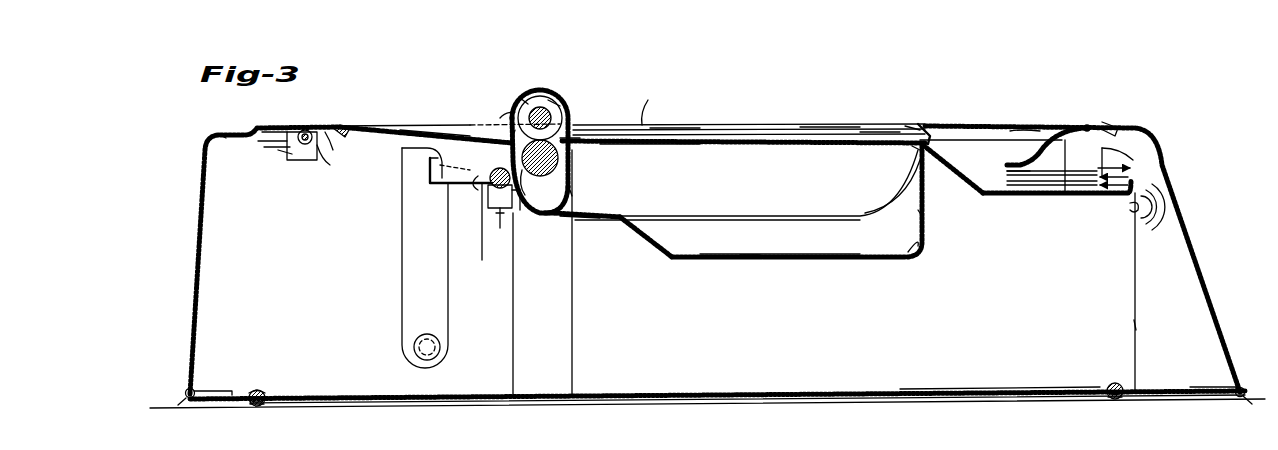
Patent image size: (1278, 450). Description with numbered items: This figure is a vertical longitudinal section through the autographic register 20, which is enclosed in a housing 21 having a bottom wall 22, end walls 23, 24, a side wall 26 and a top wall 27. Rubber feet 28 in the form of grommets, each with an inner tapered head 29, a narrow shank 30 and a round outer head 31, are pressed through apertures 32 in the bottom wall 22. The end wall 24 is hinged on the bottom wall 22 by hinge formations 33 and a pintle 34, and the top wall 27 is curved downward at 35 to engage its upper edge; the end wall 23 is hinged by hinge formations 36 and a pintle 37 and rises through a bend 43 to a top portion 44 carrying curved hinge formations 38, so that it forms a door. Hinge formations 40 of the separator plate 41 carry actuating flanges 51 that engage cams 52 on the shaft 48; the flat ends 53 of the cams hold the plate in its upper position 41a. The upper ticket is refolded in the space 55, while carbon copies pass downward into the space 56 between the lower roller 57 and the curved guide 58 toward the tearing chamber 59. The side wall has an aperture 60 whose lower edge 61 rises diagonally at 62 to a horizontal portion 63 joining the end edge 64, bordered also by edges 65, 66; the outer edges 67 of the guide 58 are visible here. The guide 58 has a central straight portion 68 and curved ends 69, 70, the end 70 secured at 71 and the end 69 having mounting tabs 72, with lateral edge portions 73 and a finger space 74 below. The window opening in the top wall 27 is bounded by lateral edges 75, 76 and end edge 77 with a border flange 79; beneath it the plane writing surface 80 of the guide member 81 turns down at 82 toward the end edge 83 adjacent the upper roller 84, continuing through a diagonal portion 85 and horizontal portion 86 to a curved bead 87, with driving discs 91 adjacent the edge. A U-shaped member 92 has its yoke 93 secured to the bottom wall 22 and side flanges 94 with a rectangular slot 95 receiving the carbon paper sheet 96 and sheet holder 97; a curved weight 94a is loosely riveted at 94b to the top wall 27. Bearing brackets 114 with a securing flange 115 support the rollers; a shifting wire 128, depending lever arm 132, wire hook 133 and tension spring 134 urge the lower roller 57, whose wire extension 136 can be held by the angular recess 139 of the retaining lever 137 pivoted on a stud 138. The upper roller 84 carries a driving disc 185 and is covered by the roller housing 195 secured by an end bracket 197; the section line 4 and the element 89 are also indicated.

The section line 4- 4 is at (548, 60).
The autographic register 20 is at (686, 123).
The housing 21 is at (962, 125).
The bottom wall 22 is at (667, 395).
The end wall 23 is at (206, 277).
The end wall 24 is at (1200, 282).
The side wall 26 is at (855, 397).
The top wall 27 is at (1044, 126).
The rubber feet 28 is at (260, 390).
The inner tapered head 29 is at (252, 390).
The narrow shank 30 is at (265, 395).
The round outer head 31 is at (260, 405).
The apertures 32 is at (255, 405).
The hinge formations 33 is at (1250, 402).
The pintle 34 is at (1238, 396).
The curved portion 35 is at (1135, 126).
The hinge formations 36 is at (186, 400).
The pintle 37 is at (194, 391).
The curved hinge formations 38 is at (340, 127).
The hinge formations 40 is at (334, 150).
The separator or stripper plate 41 is at (474, 127).
The separator plate upper position 41a is at (441, 132).
The bend 43 is at (220, 134).
The top portion 44 is at (281, 130).
The shaft 48 is at (307, 130).
The actuating flanges 51 is at (326, 167).
The cams 52 is at (270, 140).
The flat ends 53 is at (268, 148).
The space 55 is at (350, 380).
The space 56 is at (514, 126).
The lower roller 57 is at (575, 118).
The curved guide 58 is at (570, 200).
The tearing chamber 59 is at (300, 160).
The aperture 60 is at (905, 260).
The lower edge 61 is at (808, 256).
The diagonal edge portion 62 is at (650, 246).
The horizontal portion 63 is at (604, 214).
The end edge 64 is at (578, 147).
The edge 65 is at (916, 212).
The edge 66 is at (658, 146).
The outer edges 67 is at (786, 220).
The central straight portion 68 is at (742, 215).
The upwardly curved end portion 69 is at (526, 192).
The upwardly curved end portion 70 is at (900, 188).
The securing point 71 is at (912, 152).
The mounting tabs 72 is at (472, 160).
The lateral edge portions 73 is at (582, 218).
The finger space 74 is at (750, 240).
The lateral edge 75 is at (645, 124).
The lateral edge 76 is at (372, 124).
The end edge 77 is at (888, 130).
The border flange 79 is at (910, 125).
The plane writing surface portion 80 is at (797, 124).
The guide member 81 is at (945, 180).
The diagonal turn 82 is at (920, 124).
The end edge 83 is at (588, 140).
The upper roller 84 is at (540, 106).
The diagonal portion 85 is at (960, 162).
The horizontal portion 86 is at (1036, 195).
The curved bead 87 is at (1134, 210).
The lever 89 is at (650, 100).
The driving discs 91 is at (560, 160).
The U-shaped member 92 is at (1113, 340).
The yoke 93 is at (1010, 393).
The side flanges 94 is at (1030, 158).
The curved weight 94a is at (1006, 168).
The rivets 94b is at (1089, 124).
The rectangular slot 95 is at (1120, 116).
The carbon paper sheet 96 is at (1078, 162).
The sheet holder 97 is at (290, 153).
The bearing brackets 114 is at (572, 312).
The securing flange 115 is at (560, 392).
The shifting wire 128 is at (492, 174).
The depending lever arm 132 is at (514, 205).
The wire hook 133 is at (498, 226).
The tension spring 134 is at (515, 215).
The wire extension 136 is at (478, 195).
The retaining lever 137 is at (410, 250).
The stud 138 is at (435, 340).
The angular recess 139 is at (415, 148).
The driving disc 185 is at (562, 104).
The roller housing 195 is at (524, 100).
The end bracket 197 is at (495, 118).